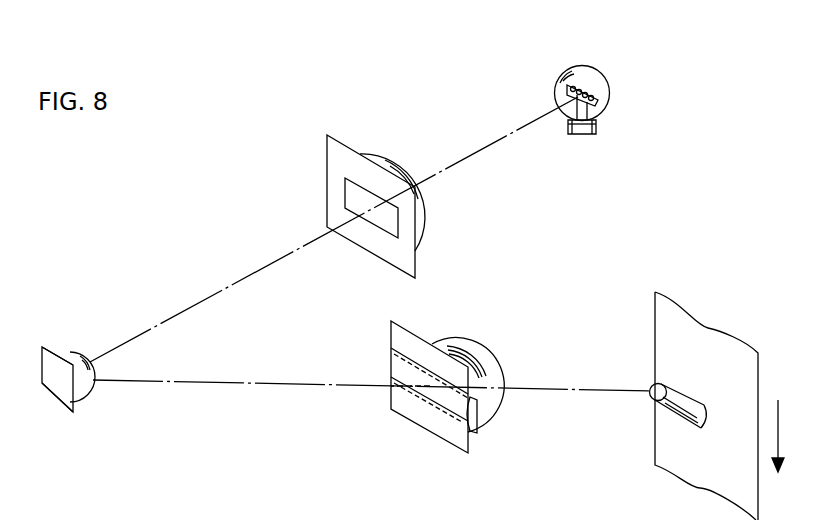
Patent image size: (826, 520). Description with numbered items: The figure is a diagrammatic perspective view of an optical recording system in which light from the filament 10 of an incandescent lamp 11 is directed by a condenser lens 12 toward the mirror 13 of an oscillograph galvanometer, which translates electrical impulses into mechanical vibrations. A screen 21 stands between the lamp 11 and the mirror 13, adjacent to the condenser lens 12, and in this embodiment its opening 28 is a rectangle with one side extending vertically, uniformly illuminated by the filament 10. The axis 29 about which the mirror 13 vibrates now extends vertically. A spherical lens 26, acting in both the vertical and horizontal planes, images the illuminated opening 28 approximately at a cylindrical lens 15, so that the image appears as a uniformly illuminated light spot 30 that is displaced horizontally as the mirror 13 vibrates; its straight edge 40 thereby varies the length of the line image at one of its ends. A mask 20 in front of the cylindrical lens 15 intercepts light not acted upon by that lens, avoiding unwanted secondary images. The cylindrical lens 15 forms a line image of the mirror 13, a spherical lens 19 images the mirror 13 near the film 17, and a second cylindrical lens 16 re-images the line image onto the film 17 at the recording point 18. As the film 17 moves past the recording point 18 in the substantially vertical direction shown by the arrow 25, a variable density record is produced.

The filament 10 is at (594, 105).
The incandescent lamp 11 is at (581, 65).
The condenser lens 12 is at (380, 152).
The mirror 13 is at (42, 373).
The cylindrical lens 15 is at (477, 425).
The second cylindrical lens 16 is at (704, 421).
The film 17 is at (711, 328).
The recording point 18 is at (661, 386).
The spherical lens 19 is at (447, 342).
The mask 20 is at (391, 321).
The screen 21 is at (327, 134).
The arrow 25 is at (781, 425).
The spherical lens 26 is at (75, 351).
The opening 28 is at (385, 221).
The axis 29 is at (57, 348).
The light spot 30 is at (418, 361).
The edge 40 is at (445, 382).